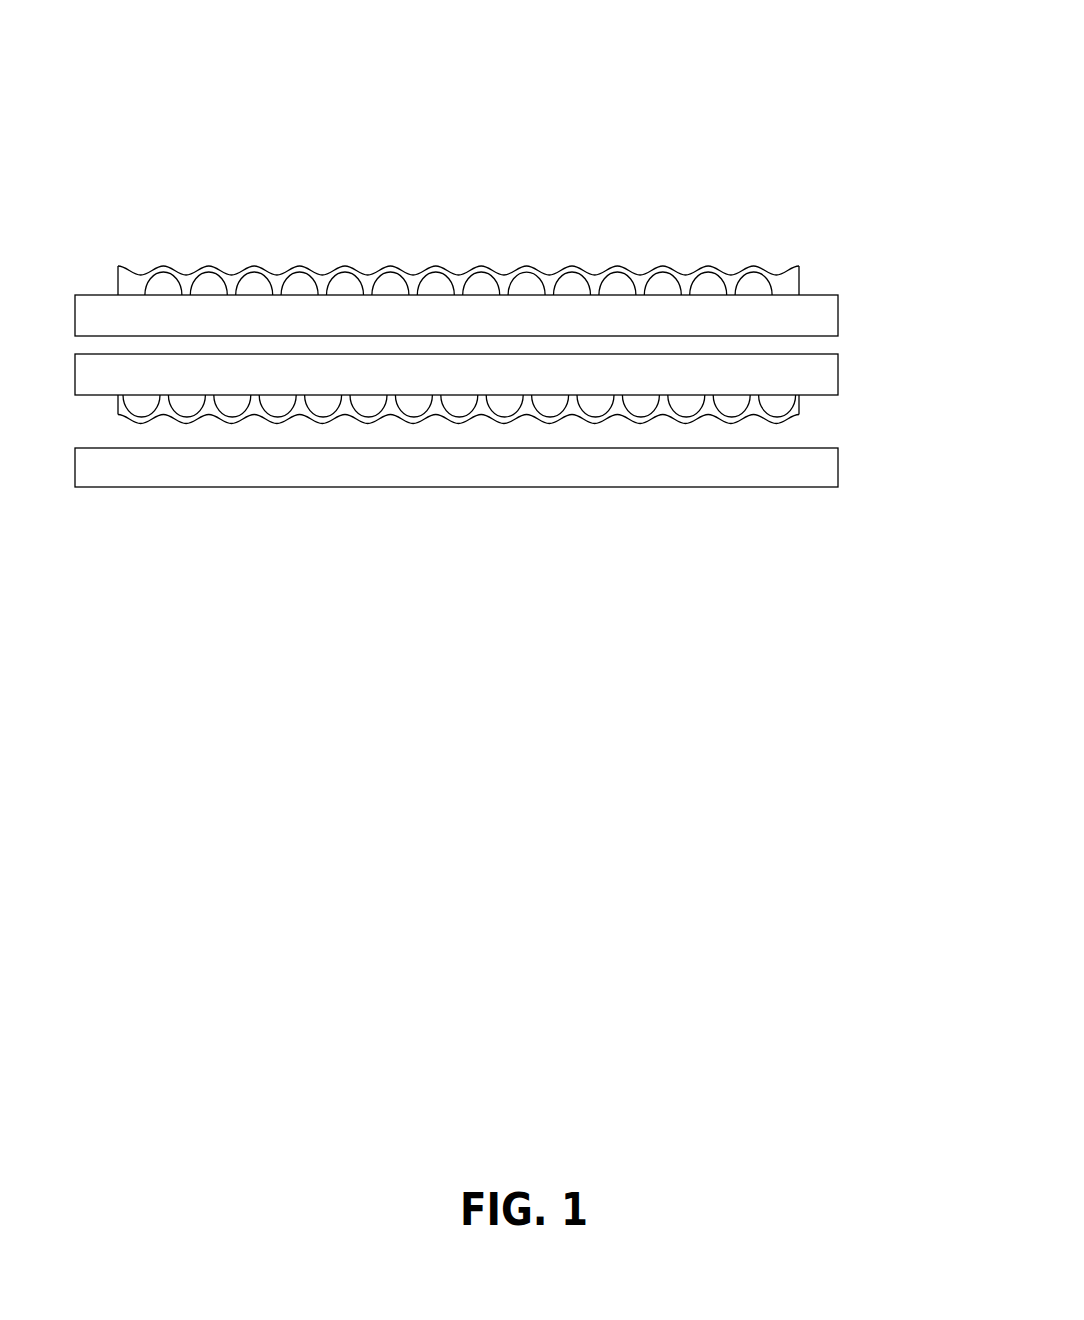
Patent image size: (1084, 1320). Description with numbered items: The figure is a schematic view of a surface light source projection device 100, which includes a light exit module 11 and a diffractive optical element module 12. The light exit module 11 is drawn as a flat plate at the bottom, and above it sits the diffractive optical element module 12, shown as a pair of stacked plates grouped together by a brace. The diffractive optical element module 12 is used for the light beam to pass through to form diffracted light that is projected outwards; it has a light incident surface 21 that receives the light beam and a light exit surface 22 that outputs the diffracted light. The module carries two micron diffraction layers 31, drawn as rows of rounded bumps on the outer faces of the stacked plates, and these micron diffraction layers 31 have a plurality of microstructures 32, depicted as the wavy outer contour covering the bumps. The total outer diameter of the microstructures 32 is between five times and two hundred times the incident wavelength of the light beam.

The surface light source projection device 100 is at (170, 37).
The light exit module 11 is at (820, 487).
The diffractive optical element module 12 is at (875, 305).
The light incident surface 21 is at (820, 395).
The light exit surface 22 is at (820, 295).
The micron diffraction layers 31 is at (662, 270).
The microstructures 32 is at (710, 270).